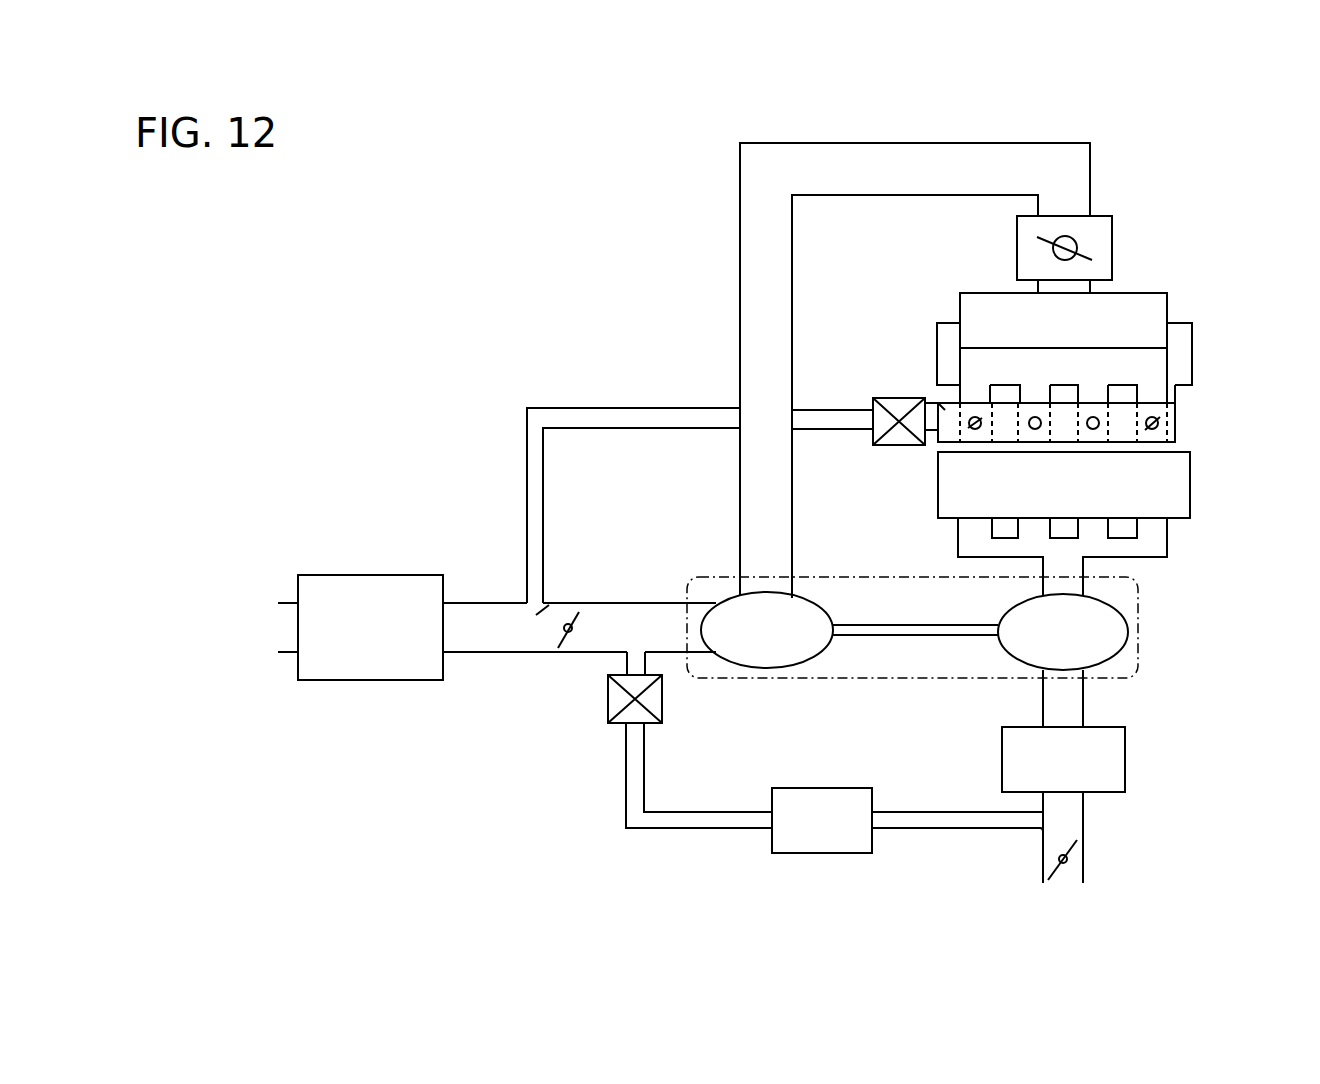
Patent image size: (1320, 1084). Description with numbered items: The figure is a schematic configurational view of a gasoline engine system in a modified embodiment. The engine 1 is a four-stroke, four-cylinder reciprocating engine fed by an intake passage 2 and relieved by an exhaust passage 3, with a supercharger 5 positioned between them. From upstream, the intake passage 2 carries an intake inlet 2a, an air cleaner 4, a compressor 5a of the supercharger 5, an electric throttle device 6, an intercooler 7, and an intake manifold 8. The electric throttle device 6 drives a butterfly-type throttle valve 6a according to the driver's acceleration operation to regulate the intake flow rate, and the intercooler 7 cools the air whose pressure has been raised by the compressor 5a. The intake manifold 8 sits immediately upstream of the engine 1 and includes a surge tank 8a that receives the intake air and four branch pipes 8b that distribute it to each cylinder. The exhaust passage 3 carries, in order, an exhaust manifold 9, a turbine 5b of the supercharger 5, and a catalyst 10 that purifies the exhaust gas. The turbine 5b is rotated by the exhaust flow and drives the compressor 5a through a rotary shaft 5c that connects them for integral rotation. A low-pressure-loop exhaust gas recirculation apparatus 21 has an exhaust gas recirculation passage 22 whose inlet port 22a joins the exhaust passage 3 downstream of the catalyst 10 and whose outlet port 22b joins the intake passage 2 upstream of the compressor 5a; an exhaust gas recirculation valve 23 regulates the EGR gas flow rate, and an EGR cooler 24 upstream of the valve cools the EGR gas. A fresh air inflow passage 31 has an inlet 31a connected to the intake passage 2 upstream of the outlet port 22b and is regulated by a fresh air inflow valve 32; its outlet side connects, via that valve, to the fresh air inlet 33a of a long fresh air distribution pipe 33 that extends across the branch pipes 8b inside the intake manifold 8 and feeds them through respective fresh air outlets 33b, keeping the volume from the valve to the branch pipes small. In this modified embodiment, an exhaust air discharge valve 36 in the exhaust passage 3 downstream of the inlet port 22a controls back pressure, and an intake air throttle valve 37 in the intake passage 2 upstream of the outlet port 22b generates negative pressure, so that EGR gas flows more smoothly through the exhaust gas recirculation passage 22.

The engine 1 is at (1190, 490).
The intake passage 2 is at (738, 272).
The intake inlet 2a is at (290, 641).
The exhaust passage 3 is at (1090, 565).
The air cleaner 4 is at (372, 590).
The supercharger 5 is at (1140, 628).
The compressor 5a is at (830, 612).
The turbine 5b is at (1002, 610).
The rotary shaft 5c is at (930, 637).
The electric throttle device 6 is at (1093, 216).
The throttle valve 6a is at (1042, 246).
The intercooler 7 is at (958, 296).
The intake manifold 8 is at (1193, 360).
The surge tank 8a is at (1185, 332).
The branch pipes 8b is at (1178, 397).
The exhaust manifold 9 is at (1170, 555).
The catalyst 10 is at (1125, 760).
The exhaust gas recirculation apparatus 21 is at (633, 852).
The exhaust gas recirculation passage 22 is at (692, 830).
The inlet port 22a is at (1040, 838).
The outlet port 22b is at (642, 648).
The exhaust gas recirculation valve 23 is at (656, 725).
The EGR cooler 24 is at (820, 787).
The fresh air inflow passage 31 is at (526, 492).
The inlet 31a is at (560, 614).
The fresh air inflow valve 32 is at (885, 447).
The fresh air distribution pipe 33 is at (1178, 410).
The fresh air inlet 33a is at (942, 408).
The fresh air outlets 33b is at (946, 443).
The exhaust air discharge valve 36 is at (1085, 860).
The intake air throttle valve 37 is at (558, 650).